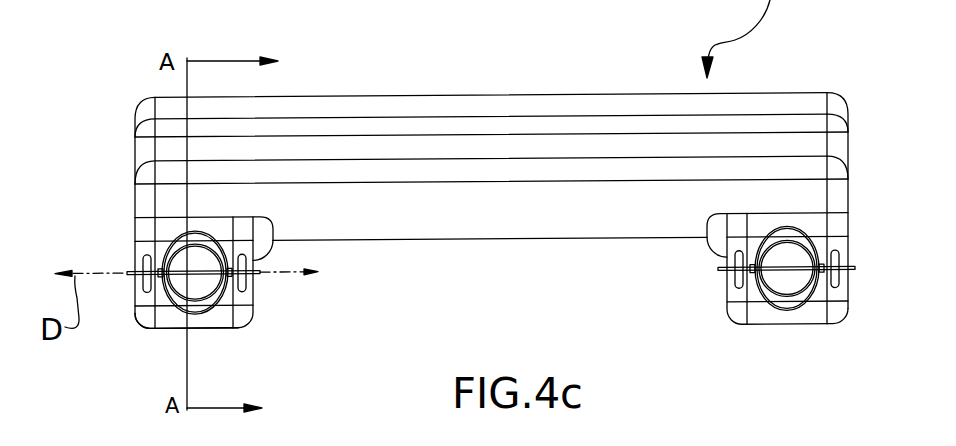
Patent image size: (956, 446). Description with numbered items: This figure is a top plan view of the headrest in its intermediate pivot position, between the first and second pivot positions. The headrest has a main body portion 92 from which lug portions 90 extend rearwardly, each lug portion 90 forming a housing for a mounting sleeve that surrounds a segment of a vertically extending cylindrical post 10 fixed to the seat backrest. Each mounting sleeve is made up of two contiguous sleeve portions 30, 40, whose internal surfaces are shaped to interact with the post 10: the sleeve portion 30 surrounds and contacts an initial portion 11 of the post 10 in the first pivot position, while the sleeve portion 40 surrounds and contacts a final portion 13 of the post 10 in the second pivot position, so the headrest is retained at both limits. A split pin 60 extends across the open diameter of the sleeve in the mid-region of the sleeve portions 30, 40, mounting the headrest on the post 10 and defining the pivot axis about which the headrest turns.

The cylindrical post 10 is at (200, 305).
The initial portion of the post 11 is at (172, 246).
The final portion of the post 13 is at (195, 300).
The sleeve portion 30 is at (184, 240).
The sleeve portion 40 is at (193, 300).
The split pin 60 is at (128, 277).
The lug portion 90 is at (170, 318).
The main body portion 92 is at (422, 200).